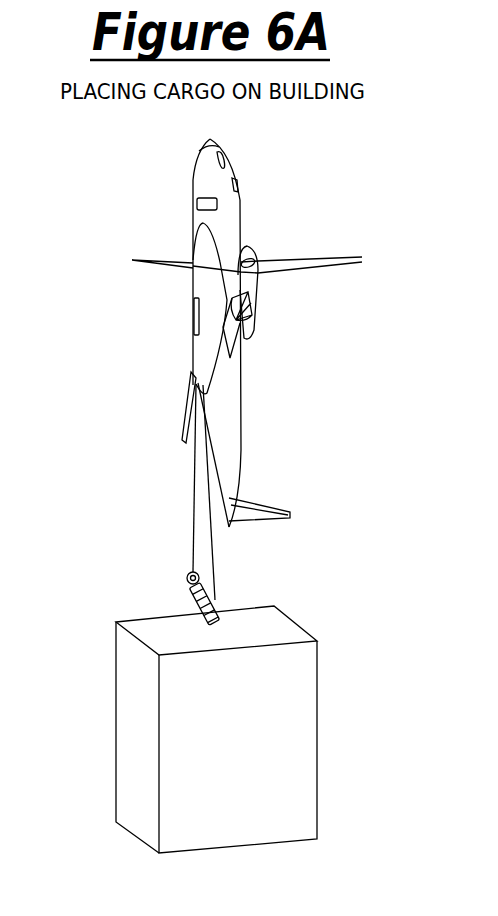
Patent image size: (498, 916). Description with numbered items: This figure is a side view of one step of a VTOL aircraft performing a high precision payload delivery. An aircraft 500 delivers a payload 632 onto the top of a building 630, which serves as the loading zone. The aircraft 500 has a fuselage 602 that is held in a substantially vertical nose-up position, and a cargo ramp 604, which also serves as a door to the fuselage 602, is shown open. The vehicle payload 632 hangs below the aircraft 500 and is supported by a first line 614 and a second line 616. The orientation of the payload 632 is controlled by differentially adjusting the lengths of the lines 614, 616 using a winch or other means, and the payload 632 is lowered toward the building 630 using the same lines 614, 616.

The aircraft 500 is at (243, 333).
The fuselage 602 is at (243, 413).
The cargo ramp 604 is at (187, 412).
The first line 614 is at (192, 503).
The second line 616 is at (210, 552).
The payload 632 is at (215, 595).
The building 630 is at (317, 747).